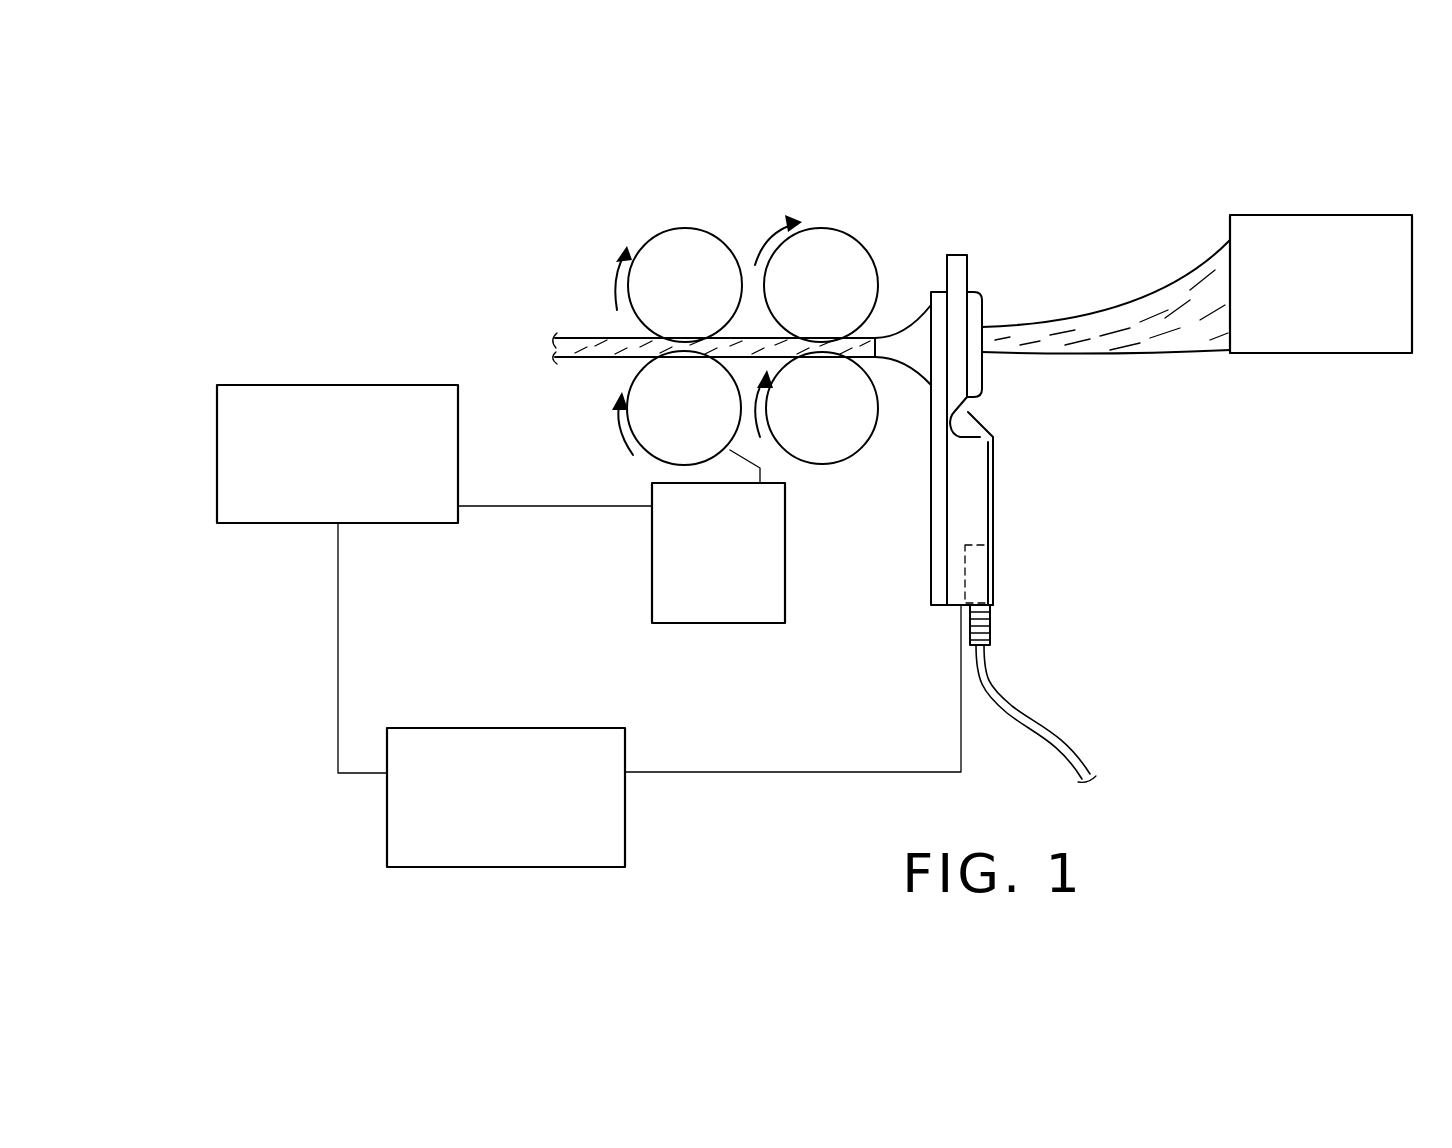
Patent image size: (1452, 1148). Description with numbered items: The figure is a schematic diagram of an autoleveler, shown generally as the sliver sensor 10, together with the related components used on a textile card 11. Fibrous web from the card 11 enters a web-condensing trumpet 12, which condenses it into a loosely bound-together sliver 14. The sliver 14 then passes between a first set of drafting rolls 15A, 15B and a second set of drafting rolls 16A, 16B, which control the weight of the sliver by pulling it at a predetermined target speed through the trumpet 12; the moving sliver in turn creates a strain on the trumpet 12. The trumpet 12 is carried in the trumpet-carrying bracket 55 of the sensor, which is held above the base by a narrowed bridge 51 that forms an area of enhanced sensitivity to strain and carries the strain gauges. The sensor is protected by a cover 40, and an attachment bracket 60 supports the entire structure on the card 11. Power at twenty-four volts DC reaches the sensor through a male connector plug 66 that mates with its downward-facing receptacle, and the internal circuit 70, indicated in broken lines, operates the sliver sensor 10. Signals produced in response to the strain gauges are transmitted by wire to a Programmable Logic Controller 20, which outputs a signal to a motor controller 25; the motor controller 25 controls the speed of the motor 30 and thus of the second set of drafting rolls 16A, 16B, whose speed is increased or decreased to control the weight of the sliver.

The sliver sensor 10 is at (996, 242).
The textile card 11 is at (1340, 180).
The web-condensing trumpet 12 is at (912, 335).
The sliver 14 is at (572, 345).
The first set drafting roll 15A is at (832, 245).
The first set drafting roll 15B is at (845, 455).
The second set drafting roll 16A is at (681, 247).
The second set drafting roll 16B is at (663, 450).
The Programmable Logic Controller (PLC) 20 is at (603, 867).
The motor controller 25 is at (310, 385).
The motor 30 is at (652, 612).
The cover 40 is at (995, 468).
The bridge 51 is at (965, 415).
The trumpet-carrying bracket 55 is at (956, 270).
The attachment bracket 60 is at (942, 523).
The male connector plug 66 is at (1063, 732).
The circuit 70 is at (977, 560).